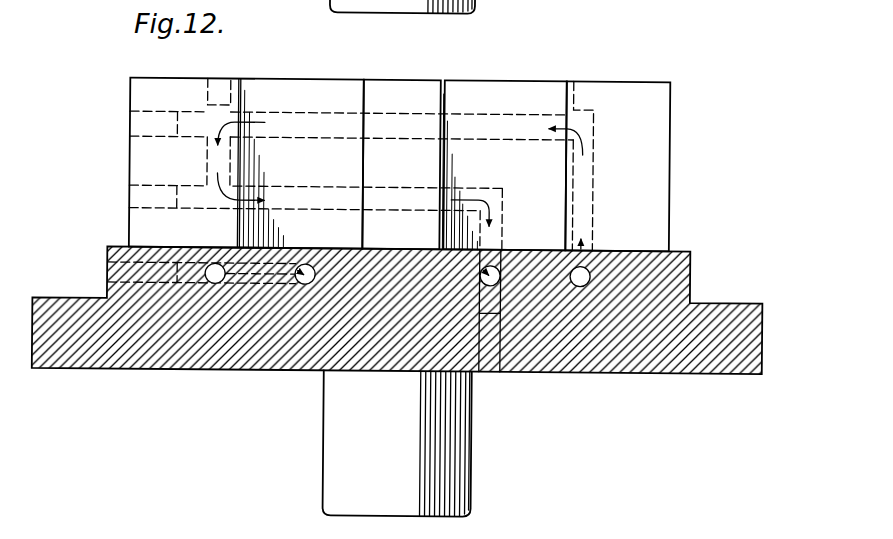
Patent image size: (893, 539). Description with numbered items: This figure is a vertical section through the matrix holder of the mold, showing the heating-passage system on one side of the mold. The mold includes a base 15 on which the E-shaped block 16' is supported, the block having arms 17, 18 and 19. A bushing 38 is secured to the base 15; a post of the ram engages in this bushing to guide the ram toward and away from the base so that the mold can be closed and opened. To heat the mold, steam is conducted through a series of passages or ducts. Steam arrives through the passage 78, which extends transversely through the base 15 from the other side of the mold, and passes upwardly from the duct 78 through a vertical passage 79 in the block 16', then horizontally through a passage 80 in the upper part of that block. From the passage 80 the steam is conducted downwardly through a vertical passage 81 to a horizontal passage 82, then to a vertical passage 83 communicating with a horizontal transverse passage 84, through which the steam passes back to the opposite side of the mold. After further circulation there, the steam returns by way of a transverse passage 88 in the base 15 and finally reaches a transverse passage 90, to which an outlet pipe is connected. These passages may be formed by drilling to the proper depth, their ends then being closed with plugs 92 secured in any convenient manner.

The base 15 is at (598, 365).
The E-shaped block 16' is at (504, 149).
The arm 17 is at (142, 102).
The arm 18 is at (403, 90).
The arm 19 is at (632, 97).
The bushing 38 is at (335, 425).
The passage 78 is at (574, 271).
The vertical passage 79 is at (588, 205).
The passage 80 is at (305, 120).
The vertical passage 81 is at (208, 155).
The horizontal passage 82 is at (328, 195).
The vertical passage 83 is at (497, 230).
The horizontal transverse passage 84 is at (485, 273).
The transverse passage 88 is at (212, 263).
The transverse passage 90 is at (305, 262).
The plug 92 is at (216, 83).